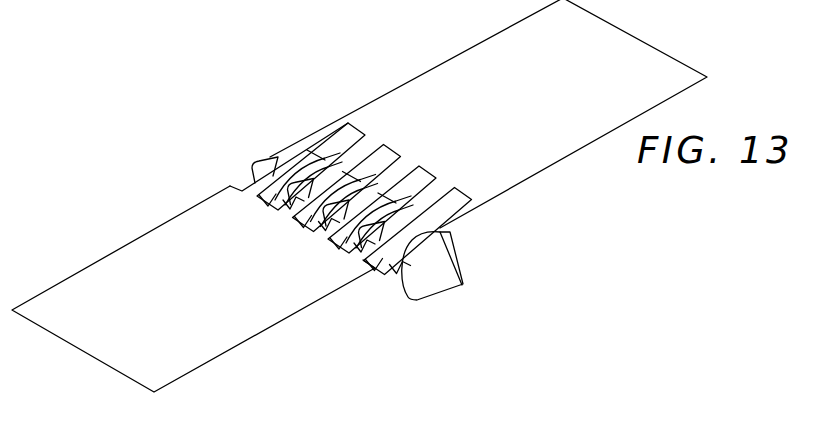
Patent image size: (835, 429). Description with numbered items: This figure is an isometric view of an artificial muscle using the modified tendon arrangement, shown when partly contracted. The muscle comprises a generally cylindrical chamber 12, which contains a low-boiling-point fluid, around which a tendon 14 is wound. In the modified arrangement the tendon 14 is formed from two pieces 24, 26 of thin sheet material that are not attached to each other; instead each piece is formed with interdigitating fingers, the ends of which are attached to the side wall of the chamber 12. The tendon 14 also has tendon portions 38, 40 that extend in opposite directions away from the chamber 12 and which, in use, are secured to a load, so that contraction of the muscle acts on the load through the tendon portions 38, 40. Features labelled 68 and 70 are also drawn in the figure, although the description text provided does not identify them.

The chamber 12 is at (441, 300).
The tendon 14 is at (193, 198).
The piece of thin sheet material 24 is at (167, 203).
The piece of thin sheet material 26 is at (417, 57).
The tendon portion 38 is at (133, 348).
The tendon portion 40 is at (637, 58).
The rib 68 is at (280, 180).
The arched spring element 70 is at (360, 150).